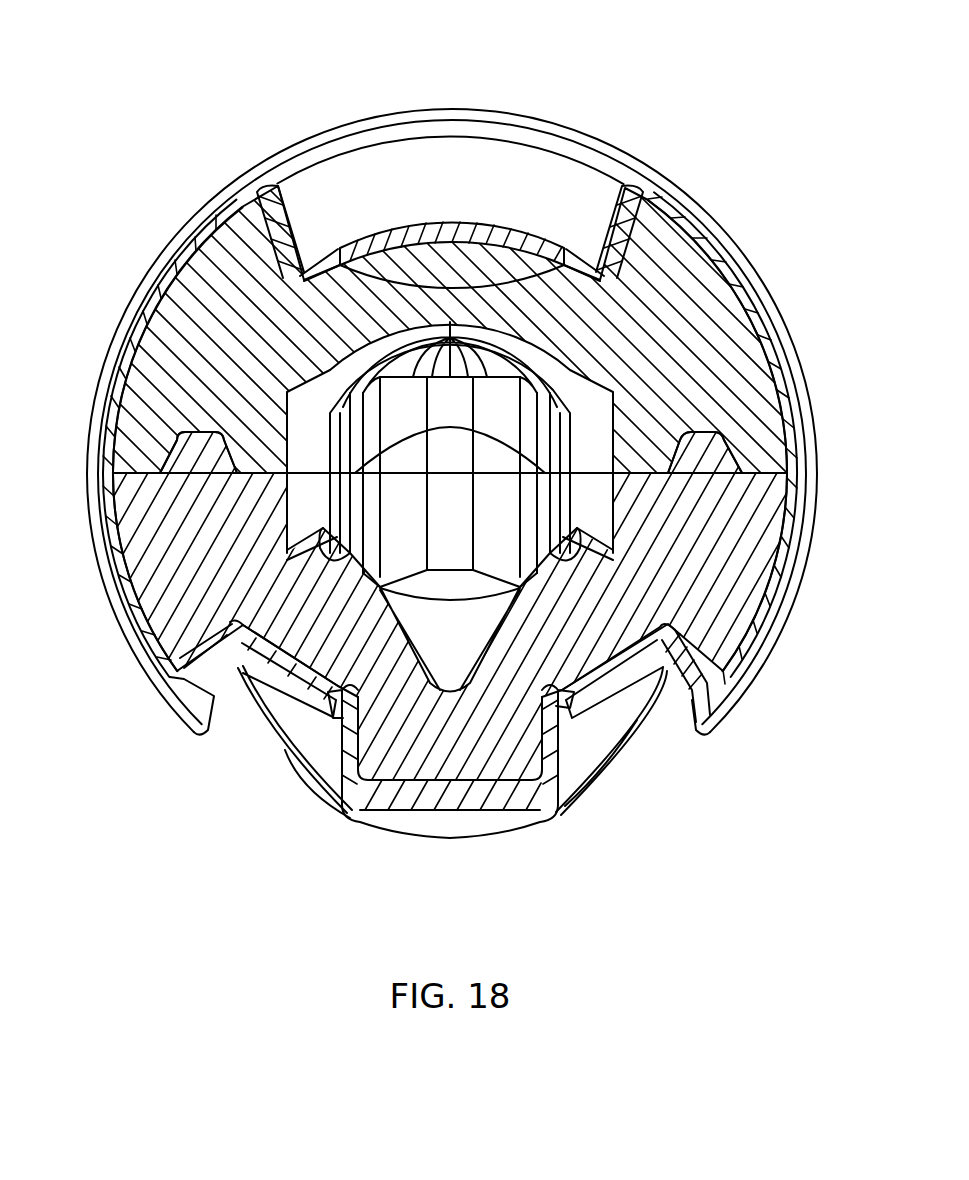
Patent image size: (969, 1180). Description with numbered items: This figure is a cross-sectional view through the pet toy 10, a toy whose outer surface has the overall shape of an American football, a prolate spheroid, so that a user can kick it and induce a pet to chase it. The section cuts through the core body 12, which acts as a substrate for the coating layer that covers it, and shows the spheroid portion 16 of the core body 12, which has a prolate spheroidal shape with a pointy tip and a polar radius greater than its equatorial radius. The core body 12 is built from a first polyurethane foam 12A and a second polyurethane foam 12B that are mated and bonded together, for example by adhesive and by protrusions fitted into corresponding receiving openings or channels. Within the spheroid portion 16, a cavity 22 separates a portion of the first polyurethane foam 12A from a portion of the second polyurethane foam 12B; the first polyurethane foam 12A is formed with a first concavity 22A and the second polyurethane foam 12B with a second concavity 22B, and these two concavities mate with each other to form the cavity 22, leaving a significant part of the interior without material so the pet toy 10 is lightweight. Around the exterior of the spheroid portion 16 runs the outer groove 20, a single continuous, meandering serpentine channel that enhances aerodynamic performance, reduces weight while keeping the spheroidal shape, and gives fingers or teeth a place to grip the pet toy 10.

The pet toy 10 is at (744, 212).
The core body 12 is at (173, 333).
The first polyurethane foam 12A is at (200, 262).
The second polyurethane foam 12B is at (765, 562).
The spheroid portion 16 is at (520, 826).
The outer groove 20 is at (385, 165).
The cavity 22 is at (586, 432).
The first concavity 22A is at (330, 603).
The second concavity 22B is at (325, 377).